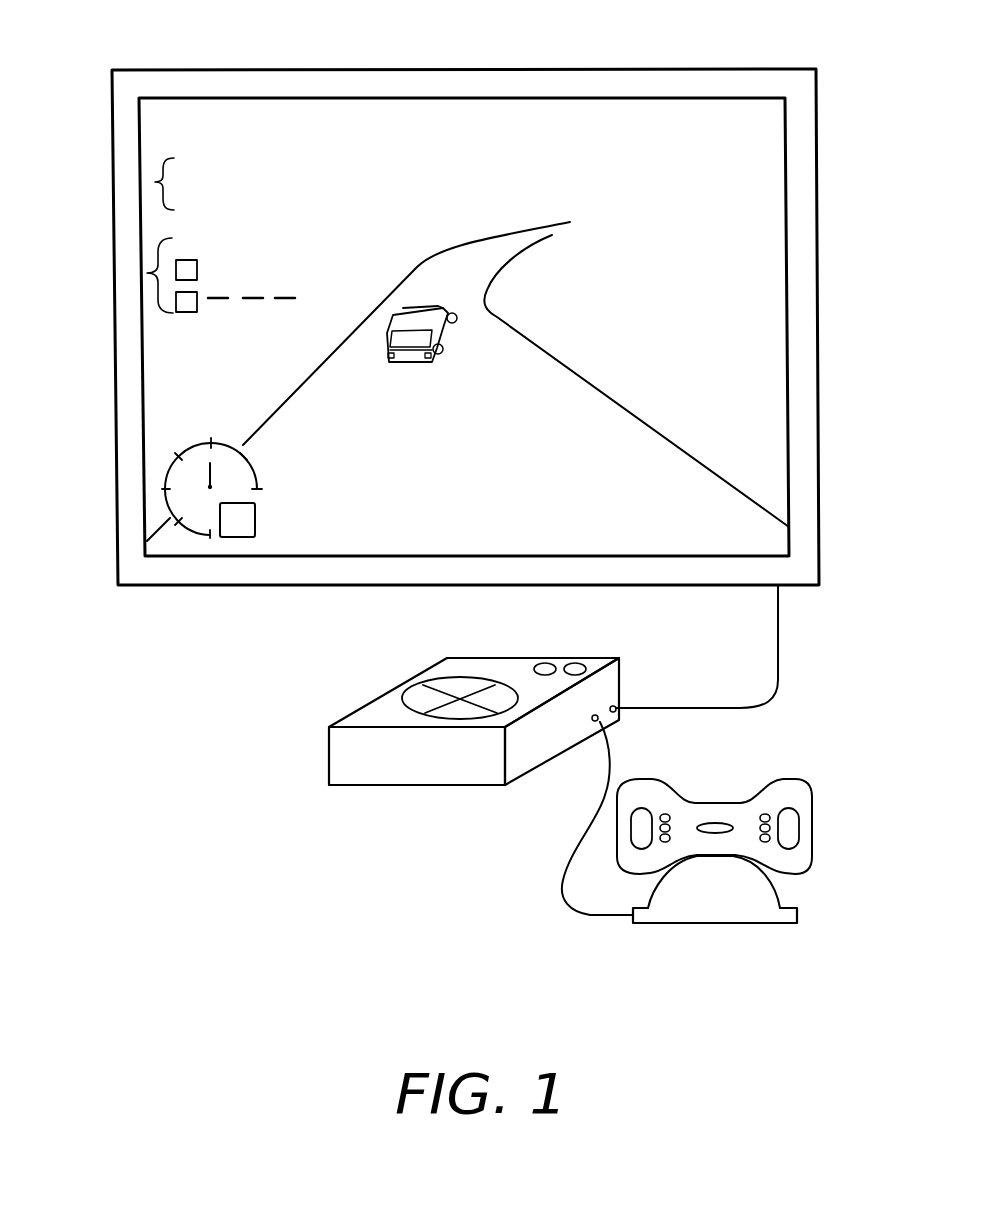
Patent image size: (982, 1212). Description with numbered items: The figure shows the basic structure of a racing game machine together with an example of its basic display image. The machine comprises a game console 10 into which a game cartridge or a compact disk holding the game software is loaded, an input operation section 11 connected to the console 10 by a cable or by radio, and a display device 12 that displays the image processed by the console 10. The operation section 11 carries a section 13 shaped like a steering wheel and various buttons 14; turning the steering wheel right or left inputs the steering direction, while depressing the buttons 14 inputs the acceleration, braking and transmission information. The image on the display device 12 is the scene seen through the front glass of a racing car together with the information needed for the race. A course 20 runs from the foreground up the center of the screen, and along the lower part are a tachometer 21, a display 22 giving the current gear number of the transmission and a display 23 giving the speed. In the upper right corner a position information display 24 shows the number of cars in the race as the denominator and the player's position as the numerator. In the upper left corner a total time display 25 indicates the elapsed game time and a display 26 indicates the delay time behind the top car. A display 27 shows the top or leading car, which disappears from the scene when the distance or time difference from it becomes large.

The game console 10 is at (388, 690).
The input operation section 11 is at (787, 890).
The display device 12 is at (818, 191).
The steering-wheel-shaped section 13 is at (801, 784).
The buttons 14 is at (665, 813).
The course 20 is at (588, 402).
The tachometer 21 is at (168, 465).
The gear number display 22 is at (235, 538).
The speed display 23 is at (330, 543).
The position information display 24 is at (668, 128).
The total time display 25 is at (155, 182).
The delay time display 26 is at (147, 273).
The leading car display 27 is at (425, 304).